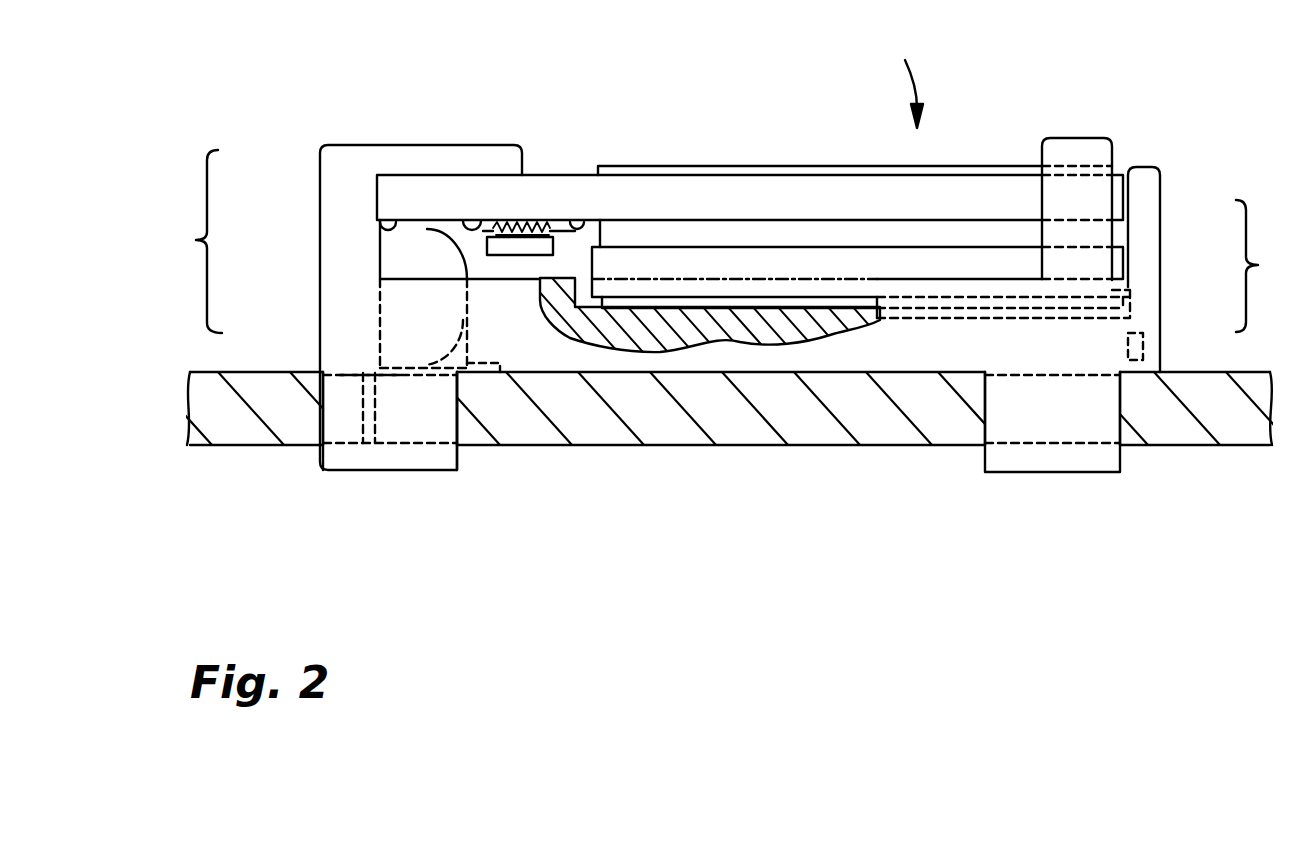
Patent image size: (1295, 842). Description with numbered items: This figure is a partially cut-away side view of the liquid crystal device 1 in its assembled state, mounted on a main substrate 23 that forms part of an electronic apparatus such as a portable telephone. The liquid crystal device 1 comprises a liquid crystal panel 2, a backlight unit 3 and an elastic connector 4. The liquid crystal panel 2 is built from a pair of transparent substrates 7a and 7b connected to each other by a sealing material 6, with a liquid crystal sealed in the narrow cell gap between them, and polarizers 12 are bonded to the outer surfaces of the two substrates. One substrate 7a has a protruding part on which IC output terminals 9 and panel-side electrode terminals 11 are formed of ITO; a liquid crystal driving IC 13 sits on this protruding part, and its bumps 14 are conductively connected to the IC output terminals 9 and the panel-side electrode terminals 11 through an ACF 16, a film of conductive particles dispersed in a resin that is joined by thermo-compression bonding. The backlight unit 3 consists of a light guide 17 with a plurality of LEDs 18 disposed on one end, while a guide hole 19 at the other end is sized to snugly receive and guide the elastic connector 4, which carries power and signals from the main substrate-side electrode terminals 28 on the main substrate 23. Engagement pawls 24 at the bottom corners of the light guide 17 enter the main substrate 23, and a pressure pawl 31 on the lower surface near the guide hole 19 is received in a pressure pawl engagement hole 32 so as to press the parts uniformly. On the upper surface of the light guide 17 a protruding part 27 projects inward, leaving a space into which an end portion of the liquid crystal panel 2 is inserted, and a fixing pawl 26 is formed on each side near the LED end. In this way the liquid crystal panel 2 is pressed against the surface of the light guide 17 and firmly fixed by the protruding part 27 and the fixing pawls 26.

The liquid crystal device 1 is at (195, 241).
The liquid crystal panel 2 is at (919, 76).
The backlight unit 3 is at (1260, 266).
The elastic connector 4 is at (398, 262).
The sealing material 6 is at (683, 233).
The substrate 7a is at (840, 207).
The substrate 7b is at (948, 258).
The IC output terminals 9 is at (586, 230).
The panel-side electrode terminals 11 is at (397, 240).
The polarizers 12 is at (753, 170).
The liquid crystal driving IC 13 is at (503, 245).
The bumps 14 is at (540, 222).
The ACF (anisotropic conductive film) 16 is at (463, 225).
The light guide 17 is at (1142, 240).
The LEDs 18 is at (1140, 343).
The guide hole 19 is at (497, 373).
The main substrate 23 is at (748, 428).
The engagement pawls 24 is at (438, 455).
The fixing pawl 26 is at (1067, 152).
The protruding part 27 is at (403, 162).
The main substrate-side electrode terminals 28 is at (400, 367).
The pressure pawl 31 is at (400, 455).
The pressure pawl engagement hole 32 is at (367, 380).